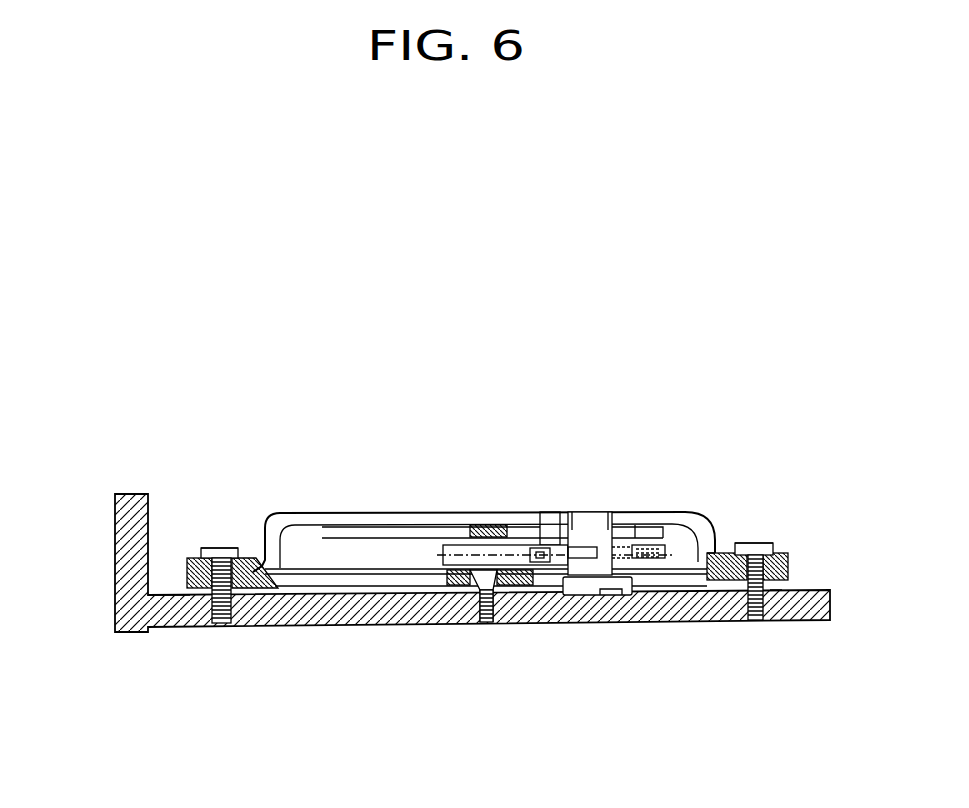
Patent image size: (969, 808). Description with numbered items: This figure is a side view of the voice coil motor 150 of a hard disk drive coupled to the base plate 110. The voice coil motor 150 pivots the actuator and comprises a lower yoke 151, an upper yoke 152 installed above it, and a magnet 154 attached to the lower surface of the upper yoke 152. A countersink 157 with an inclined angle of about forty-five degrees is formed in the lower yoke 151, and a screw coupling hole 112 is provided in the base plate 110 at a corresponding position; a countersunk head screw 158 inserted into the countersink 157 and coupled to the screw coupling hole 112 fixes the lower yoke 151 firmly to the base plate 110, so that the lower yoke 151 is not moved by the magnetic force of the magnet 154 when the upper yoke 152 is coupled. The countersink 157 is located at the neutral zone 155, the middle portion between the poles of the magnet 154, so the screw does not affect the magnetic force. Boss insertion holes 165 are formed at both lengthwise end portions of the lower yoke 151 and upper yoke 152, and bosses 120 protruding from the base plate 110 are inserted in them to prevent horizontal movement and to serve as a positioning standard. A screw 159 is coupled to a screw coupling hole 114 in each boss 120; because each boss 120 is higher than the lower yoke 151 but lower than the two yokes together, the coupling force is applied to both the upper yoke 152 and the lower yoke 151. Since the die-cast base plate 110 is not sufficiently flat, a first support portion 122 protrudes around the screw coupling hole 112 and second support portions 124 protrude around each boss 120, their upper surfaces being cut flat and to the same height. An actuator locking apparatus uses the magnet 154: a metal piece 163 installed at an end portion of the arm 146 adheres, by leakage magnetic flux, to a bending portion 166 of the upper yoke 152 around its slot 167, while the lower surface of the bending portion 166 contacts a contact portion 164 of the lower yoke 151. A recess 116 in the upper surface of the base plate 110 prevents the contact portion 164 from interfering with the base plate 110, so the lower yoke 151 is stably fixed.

The base plate 110 is at (824, 628).
The screw coupling hole 112 is at (486, 623).
The screw coupling hole 114 is at (221, 627).
The recess 116 is at (628, 597).
The boss 120 is at (190, 568).
The first support portion 122 is at (523, 598).
The second support portion 124 is at (115, 605).
The arm 146 is at (665, 545).
The voice coil motor 150 is at (318, 487).
The lower yoke 151 is at (317, 582).
The upper yoke 152 is at (360, 512).
The magnet 154 is at (417, 527).
The neutral zone 155 is at (490, 525).
The countersink 157 is at (452, 588).
The countersunk head screw 158 is at (462, 545).
The screw 159 is at (215, 547).
The metal piece 163 is at (551, 522).
The contact portion 164 is at (583, 597).
The boss insertion hole 165 is at (247, 550).
The bending portion 166 is at (607, 522).
The slot 167 is at (578, 525).